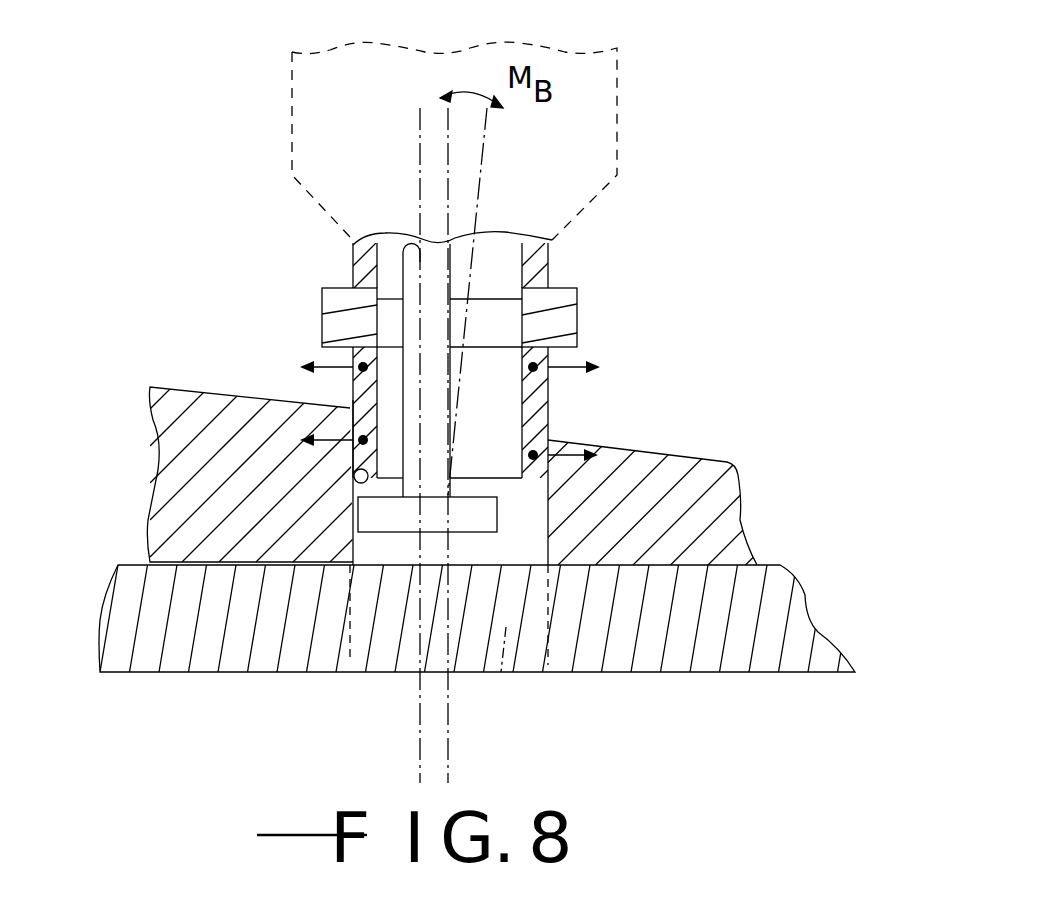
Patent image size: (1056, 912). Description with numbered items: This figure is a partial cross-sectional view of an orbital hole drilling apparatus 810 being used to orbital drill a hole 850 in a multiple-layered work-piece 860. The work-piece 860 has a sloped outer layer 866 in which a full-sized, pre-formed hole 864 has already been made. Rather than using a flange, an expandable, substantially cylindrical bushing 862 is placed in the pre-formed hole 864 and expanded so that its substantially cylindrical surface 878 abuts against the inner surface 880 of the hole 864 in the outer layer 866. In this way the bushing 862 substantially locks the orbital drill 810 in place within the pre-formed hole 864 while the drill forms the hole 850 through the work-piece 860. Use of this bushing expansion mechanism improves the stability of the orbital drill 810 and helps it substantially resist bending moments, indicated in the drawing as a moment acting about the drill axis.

The orbital hole drilling apparatus 810 is at (590, 82).
The hole 850 is at (500, 673).
The multiple-layered work-piece 860 is at (913, 595).
The expandable, substantially cylindrical bushing 862 is at (353, 390).
The full-sized, pre-formed hole 864 is at (513, 527).
The sloped outer layer 866 is at (210, 420).
The substantially cylindrical surface 878 is at (353, 405).
The inner surface 880 is at (362, 484).